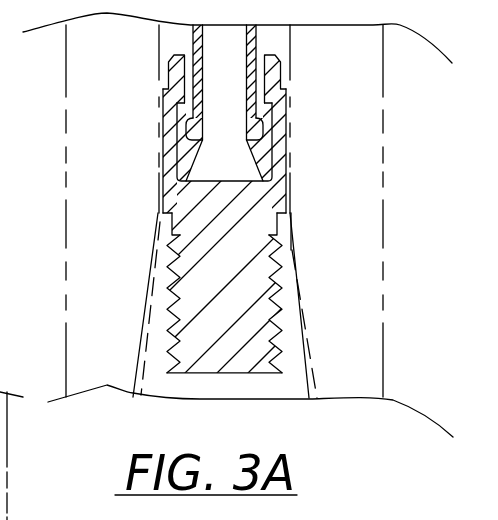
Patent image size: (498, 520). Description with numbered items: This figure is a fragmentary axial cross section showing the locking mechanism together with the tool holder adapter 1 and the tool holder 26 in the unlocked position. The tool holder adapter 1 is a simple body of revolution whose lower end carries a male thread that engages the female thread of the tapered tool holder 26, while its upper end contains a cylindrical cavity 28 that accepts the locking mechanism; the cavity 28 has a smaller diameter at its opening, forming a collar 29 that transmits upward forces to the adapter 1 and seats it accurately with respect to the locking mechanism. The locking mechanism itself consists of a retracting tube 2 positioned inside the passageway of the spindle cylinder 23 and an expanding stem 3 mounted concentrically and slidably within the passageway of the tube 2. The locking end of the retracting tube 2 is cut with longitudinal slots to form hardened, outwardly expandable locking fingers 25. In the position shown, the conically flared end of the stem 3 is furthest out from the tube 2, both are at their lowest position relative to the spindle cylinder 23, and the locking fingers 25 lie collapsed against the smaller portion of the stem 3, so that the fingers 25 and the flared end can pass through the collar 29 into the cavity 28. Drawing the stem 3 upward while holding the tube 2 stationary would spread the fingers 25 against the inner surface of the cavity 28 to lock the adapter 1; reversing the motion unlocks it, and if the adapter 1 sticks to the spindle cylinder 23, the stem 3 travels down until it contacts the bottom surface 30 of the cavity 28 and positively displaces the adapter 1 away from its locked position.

The tool holder adapter 1 is at (273, 197).
The retracting tube 2 is at (193, 36).
The expanding stem 3 is at (225, 85).
The spindle cylinder 23 is at (330, 332).
The locking fingers 25 is at (191, 133).
The tool holder 26 is at (284, 290).
The cavity 28 is at (273, 140).
The collar 29 is at (281, 91).
The bottom surface 30 is at (170, 234).